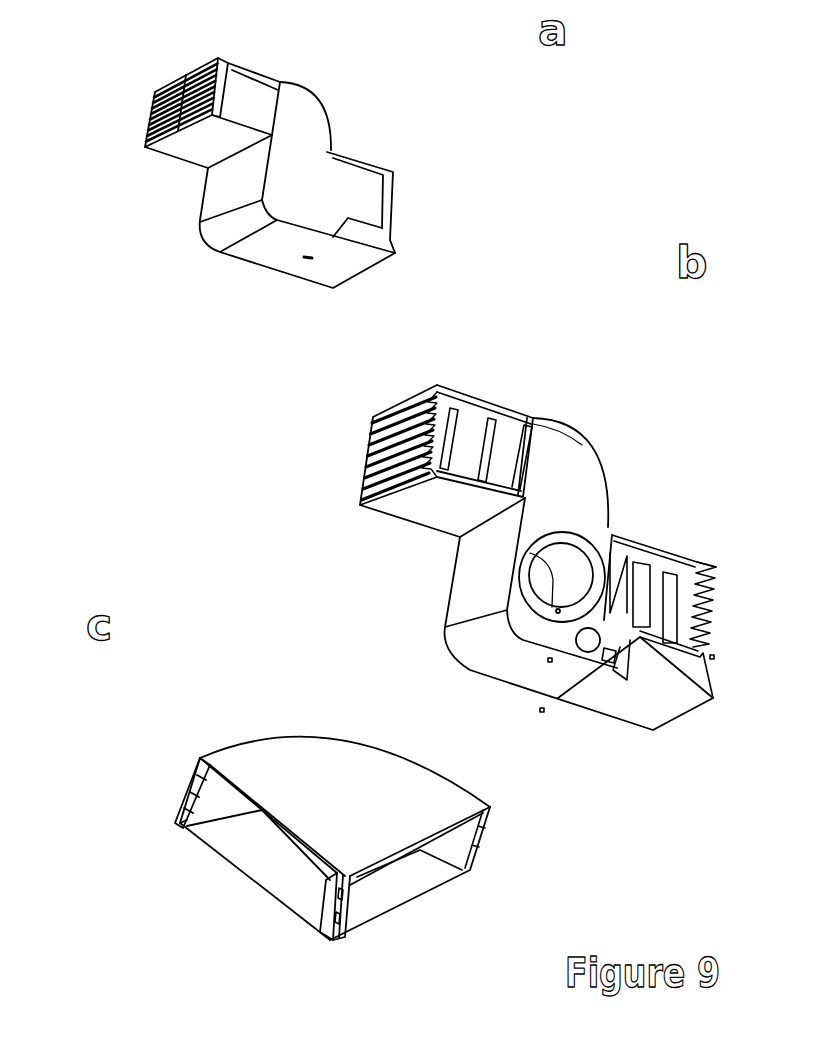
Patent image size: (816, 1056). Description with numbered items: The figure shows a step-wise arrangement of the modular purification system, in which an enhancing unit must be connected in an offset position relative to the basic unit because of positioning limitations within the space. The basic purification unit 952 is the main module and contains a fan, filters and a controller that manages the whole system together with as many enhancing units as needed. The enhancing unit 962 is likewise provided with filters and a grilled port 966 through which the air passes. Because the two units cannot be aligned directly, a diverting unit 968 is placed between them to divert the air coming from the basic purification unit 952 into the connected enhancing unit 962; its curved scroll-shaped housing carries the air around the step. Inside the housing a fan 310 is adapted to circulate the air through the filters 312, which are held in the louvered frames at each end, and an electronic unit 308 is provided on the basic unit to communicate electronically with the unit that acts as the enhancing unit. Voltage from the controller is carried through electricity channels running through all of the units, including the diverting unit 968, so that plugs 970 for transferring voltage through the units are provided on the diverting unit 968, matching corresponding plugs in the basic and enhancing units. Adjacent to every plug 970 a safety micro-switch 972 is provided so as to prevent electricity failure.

The electronic unit 308 is at (333, 268).
The fan 310 is at (610, 537).
The filters 312 is at (497, 406).
The basic purification unit 952 is at (235, 257).
The enhancing unit 962 is at (190, 152).
The grilled port 966 is at (147, 123).
The diverting unit 968 is at (305, 116).
The plugs 970 is at (180, 823).
The safety micro-switch 972 is at (193, 778).